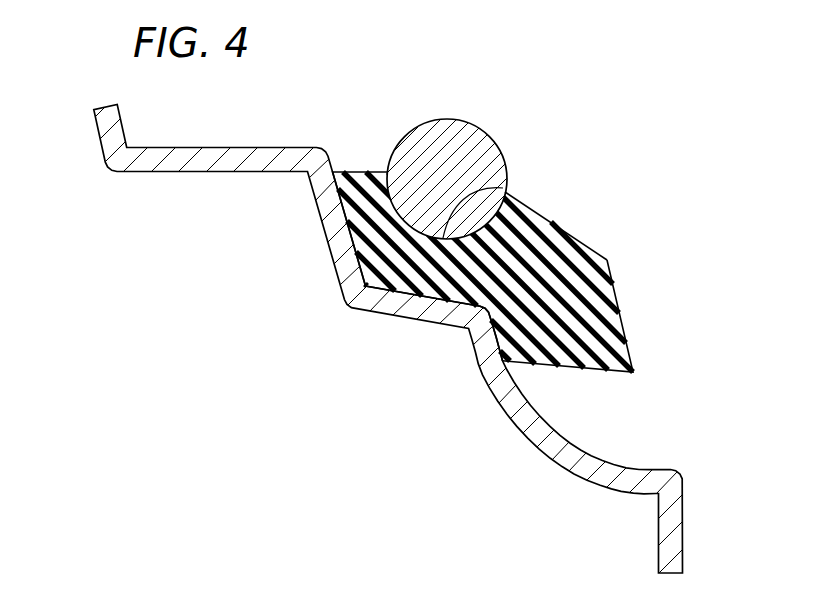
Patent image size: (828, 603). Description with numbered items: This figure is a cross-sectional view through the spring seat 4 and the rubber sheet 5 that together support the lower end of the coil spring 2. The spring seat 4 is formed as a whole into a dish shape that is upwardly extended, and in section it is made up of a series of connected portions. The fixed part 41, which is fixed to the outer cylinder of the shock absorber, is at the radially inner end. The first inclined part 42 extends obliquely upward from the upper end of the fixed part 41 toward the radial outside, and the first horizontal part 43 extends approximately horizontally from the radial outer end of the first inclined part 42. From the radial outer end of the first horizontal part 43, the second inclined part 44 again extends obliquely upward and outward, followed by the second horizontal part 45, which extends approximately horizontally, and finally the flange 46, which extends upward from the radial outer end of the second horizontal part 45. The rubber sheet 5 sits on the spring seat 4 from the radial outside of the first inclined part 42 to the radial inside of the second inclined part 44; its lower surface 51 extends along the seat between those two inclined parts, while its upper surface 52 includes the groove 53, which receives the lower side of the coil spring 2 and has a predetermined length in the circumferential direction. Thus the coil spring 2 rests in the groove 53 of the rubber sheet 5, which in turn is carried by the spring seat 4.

The coil spring 2 is at (437, 140).
The spring seat 4 is at (321, 351).
The rubber sheet 5 is at (648, 172).
The fixed part 41 is at (665, 537).
The first inclined part 42 is at (532, 450).
The first horizontal part 43 is at (415, 308).
The second inclined part 44 is at (330, 256).
The second horizontal part 45 is at (200, 163).
The flange 46 is at (105, 123).
The lower surface 51 is at (362, 308).
The upper surface 52 is at (355, 172).
The groove 53 is at (505, 190).